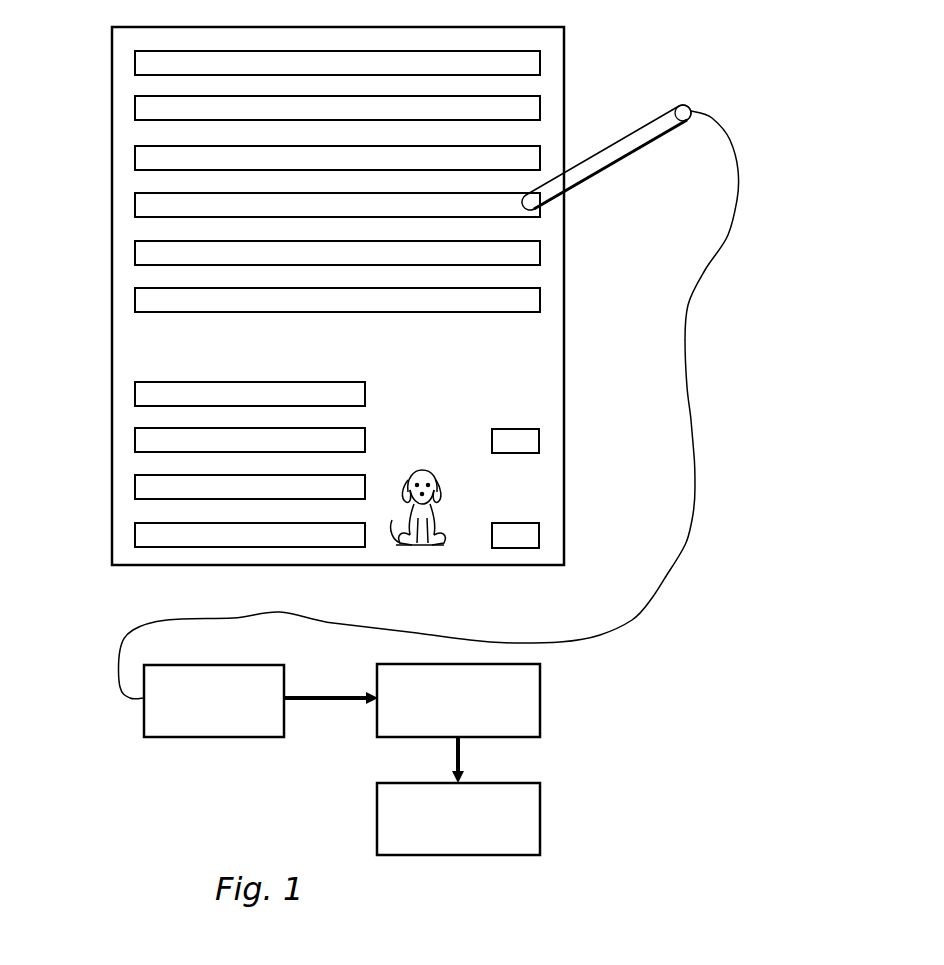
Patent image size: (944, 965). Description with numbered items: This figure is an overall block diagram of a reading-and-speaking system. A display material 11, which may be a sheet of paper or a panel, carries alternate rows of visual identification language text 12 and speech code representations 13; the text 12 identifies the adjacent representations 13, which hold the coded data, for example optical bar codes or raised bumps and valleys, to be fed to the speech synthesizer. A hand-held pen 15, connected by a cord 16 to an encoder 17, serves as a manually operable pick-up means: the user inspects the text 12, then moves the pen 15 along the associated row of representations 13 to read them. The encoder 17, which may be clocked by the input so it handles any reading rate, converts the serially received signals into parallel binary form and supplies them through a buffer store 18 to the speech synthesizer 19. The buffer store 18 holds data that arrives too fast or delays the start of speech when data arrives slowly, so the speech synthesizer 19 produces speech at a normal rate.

The display material 11 is at (556, 58).
The visual identification language text 12 is at (140, 60).
The speech code representations 13 is at (140, 105).
The pen 15 is at (641, 128).
The cord 16 is at (733, 222).
The encoder 17 is at (229, 672).
The buffer store 18 is at (540, 687).
The speech synthesizer 19 is at (540, 808).